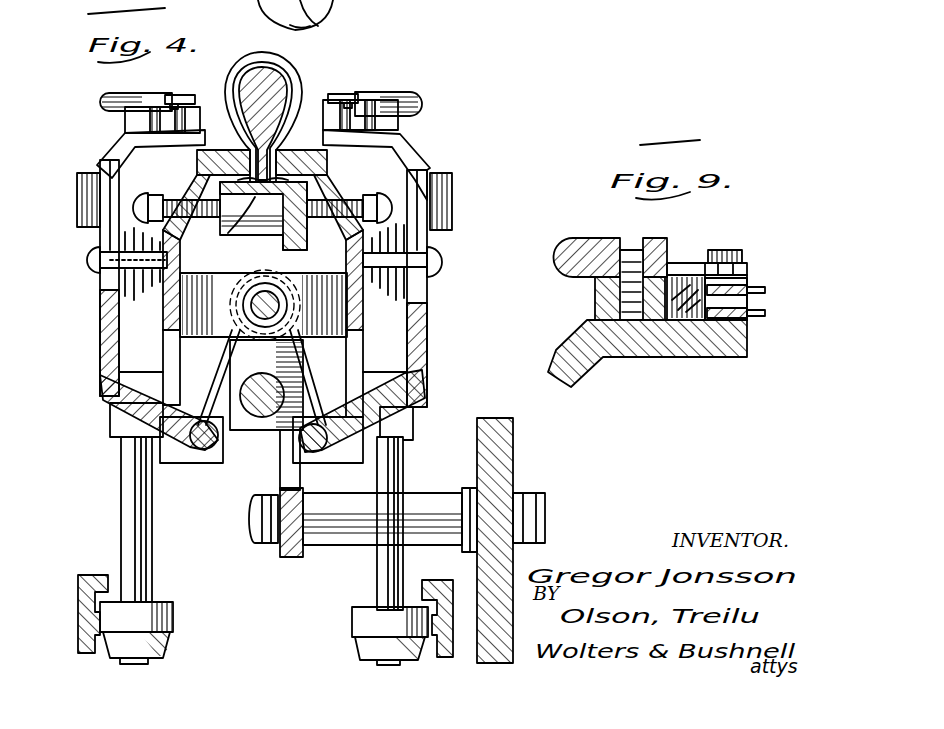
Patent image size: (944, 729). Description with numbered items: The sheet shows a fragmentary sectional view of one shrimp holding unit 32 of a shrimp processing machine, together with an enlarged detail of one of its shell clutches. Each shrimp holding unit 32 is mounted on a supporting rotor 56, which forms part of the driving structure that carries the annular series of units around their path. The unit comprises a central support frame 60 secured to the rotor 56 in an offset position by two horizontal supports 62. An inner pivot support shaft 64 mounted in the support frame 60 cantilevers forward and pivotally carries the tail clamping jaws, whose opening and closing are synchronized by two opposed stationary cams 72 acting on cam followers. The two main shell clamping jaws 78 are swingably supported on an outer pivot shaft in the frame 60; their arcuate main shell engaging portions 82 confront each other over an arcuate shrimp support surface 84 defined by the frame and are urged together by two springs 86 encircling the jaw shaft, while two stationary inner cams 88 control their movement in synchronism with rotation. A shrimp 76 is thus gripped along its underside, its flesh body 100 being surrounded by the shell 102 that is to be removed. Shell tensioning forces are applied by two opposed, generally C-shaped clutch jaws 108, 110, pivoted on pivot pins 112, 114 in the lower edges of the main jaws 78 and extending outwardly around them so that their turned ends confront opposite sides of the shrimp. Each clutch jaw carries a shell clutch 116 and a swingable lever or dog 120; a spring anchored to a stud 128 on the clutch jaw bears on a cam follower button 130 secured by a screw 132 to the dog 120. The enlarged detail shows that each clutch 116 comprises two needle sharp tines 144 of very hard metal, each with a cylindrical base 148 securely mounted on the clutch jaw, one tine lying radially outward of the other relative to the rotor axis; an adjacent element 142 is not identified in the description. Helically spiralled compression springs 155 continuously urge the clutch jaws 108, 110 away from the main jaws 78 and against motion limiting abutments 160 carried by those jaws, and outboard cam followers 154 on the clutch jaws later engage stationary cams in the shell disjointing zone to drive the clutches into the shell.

In FIG. 4, the shrimp holding unit 32 is at (92, 371).
In FIG. 4, the supporting rotor 56 is at (507, 463).
In FIG. 4, the central support frame 60 is at (280, 471).
In FIG. 4, the horizontal supports 62 is at (340, 547).
In FIG. 4, the inner pivot support shaft 64 is at (262, 410).
In FIG. 4, the stationary cams 72 is at (112, 576).
In FIG. 4, the shrimp 76 is at (302, 68).
In FIG. 4, the main shell clamping jaws 78 is at (165, 295).
In FIG. 4, the arcuate main shell engaging portions 82 is at (212, 164).
In FIG. 4, the arcuate shrimp support surface 84 is at (263, 222).
In FIG. 4, the springs 86 is at (210, 392).
In FIG. 4, the stationary inner cams 88 is at (100, 617).
In FIG. 4, the flesh body 100 is at (305, 86).
In FIG. 4, the shell 102 is at (226, 78).
In FIG. 4, the clutch jaw 108 is at (100, 163).
In FIG. 9, the clutch jaw 108 is at (586, 362).
In FIG. 4, the clutch jaw 110 is at (418, 143).
In FIG. 4, the pivot pin 112 is at (200, 453).
In FIG. 4, the pivot pin 114 is at (370, 490).
In FIG. 9, the shell clutches 116 is at (748, 300).
In FIG. 9, the lever or dog 120 is at (600, 303).
In FIG. 4, the anchoring stud 128 is at (181, 100).
In FIG. 9, the anchoring stud 128 is at (726, 250).
In FIG. 4, the cam follower button 130 is at (100, 103).
In FIG. 9, the cam follower button 130 is at (574, 238).
In FIG. 9, the screw 132 is at (641, 238).
In FIG. 9, the head 142 is at (553, 258).
In FIG. 4, the needle sharp anchoring tines 144 is at (186, 169).
In FIG. 9, the needle sharp anchoring tines 144 is at (800, 261).
In FIG. 9, the cylindrical base 148 is at (708, 308).
In FIG. 4, the outboard cam followers 154 is at (78, 188).
In FIG. 4, the compression springs 155 is at (110, 284).
In FIG. 4, the motion limiting abutments 160 is at (82, 272).